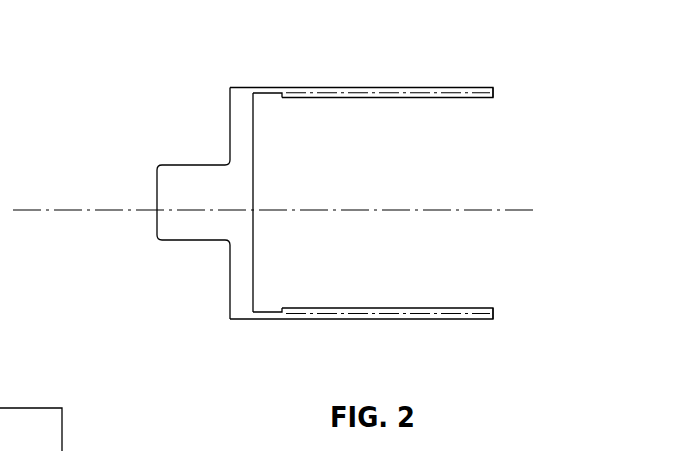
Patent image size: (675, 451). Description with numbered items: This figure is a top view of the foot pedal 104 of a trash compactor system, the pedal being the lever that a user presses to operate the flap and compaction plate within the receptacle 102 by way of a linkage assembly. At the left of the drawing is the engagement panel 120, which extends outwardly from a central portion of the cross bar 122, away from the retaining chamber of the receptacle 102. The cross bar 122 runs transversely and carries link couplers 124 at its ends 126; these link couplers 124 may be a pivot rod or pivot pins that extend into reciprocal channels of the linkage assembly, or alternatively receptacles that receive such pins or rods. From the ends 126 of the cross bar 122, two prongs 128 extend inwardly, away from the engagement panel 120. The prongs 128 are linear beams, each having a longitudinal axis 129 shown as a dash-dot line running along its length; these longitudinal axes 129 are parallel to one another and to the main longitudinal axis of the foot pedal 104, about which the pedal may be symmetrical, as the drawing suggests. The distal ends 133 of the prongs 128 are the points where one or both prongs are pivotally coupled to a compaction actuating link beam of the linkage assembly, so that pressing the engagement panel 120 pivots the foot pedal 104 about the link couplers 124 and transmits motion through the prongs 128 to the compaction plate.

The receptacle 102 is at (37, 428).
The foot pedal 104 is at (138, 55).
The engagement panel 120 is at (171, 229).
The cross bar 122 is at (242, 103).
The link couplers 124 is at (230, 87).
The ends 126 is at (255, 87).
The prongs 128 is at (348, 87).
The longitudinal axes 129 is at (440, 87).
The distal ends 133 is at (493, 90).